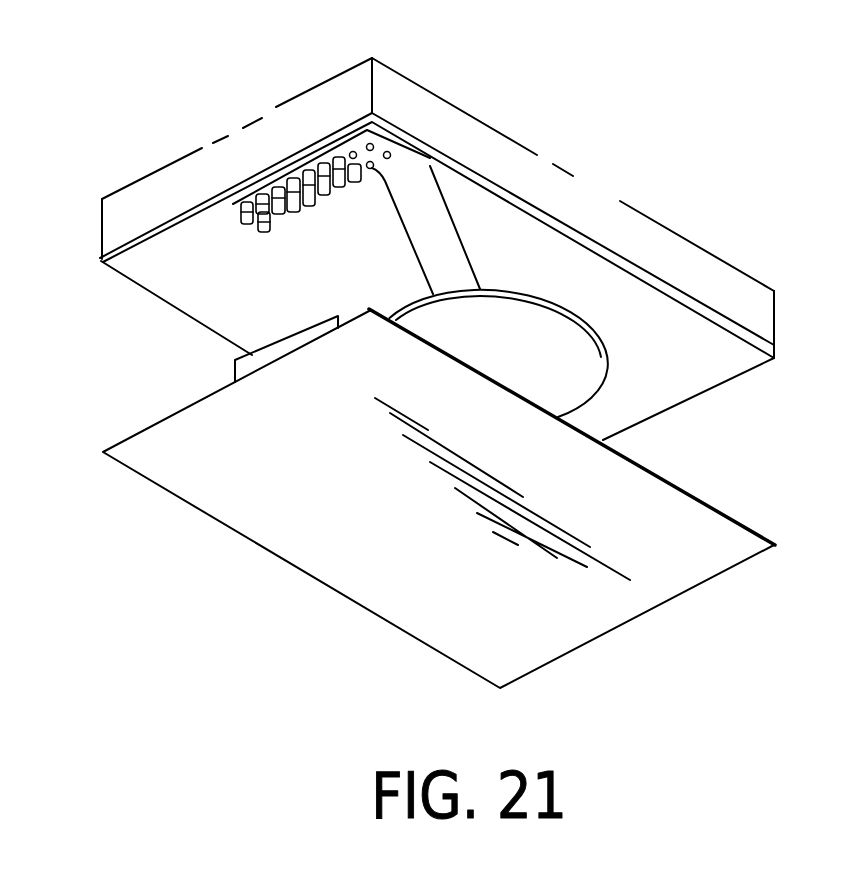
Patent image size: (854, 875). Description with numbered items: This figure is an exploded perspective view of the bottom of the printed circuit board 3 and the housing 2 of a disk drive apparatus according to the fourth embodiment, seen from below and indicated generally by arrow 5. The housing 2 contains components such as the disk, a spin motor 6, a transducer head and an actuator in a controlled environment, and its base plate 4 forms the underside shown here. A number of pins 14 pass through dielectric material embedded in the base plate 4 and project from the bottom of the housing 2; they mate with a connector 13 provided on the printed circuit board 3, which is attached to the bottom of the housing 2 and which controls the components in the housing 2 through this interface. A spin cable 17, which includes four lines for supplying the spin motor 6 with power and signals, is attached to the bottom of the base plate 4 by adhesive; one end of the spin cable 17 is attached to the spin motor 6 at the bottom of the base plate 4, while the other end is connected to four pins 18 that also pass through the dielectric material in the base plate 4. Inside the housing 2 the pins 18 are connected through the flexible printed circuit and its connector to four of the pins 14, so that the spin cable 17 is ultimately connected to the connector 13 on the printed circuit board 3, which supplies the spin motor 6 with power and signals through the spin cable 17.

The housing 2 is at (489, 160).
The printed circuit board 3 is at (638, 489).
The base plate 4 is at (549, 216).
The connector unit 5 is at (108, 217).
The spin motor 6 is at (566, 352).
The connector 13 is at (236, 362).
The pins 14 is at (260, 167).
The spin cable 17 is at (417, 224).
The pins 18 is at (380, 155).